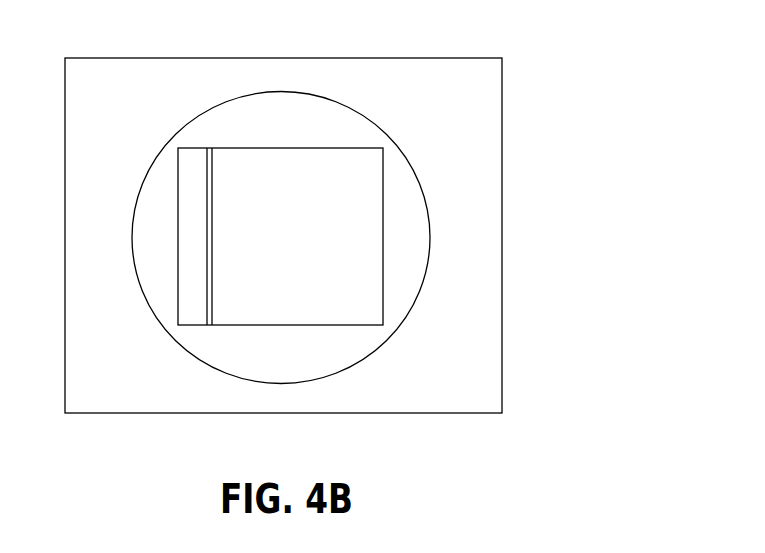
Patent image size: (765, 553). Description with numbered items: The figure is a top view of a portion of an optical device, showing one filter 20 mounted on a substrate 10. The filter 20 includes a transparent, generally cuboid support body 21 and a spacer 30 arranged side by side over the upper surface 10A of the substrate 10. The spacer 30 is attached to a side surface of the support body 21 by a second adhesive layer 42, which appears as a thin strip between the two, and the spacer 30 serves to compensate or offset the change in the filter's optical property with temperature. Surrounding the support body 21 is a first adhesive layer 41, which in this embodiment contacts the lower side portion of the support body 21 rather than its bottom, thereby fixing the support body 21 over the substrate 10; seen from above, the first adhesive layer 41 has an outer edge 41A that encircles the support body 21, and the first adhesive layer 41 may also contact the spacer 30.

The substrate 10 is at (502, 122).
The upper surface 10A is at (488, 398).
The filter 20 is at (253, 148).
The support body 21 is at (312, 248).
The spacer 30 is at (178, 167).
The first adhesive layer 41 is at (409, 208).
The outer edge 41A is at (381, 110).
The second adhesive layer 42 is at (207, 248).